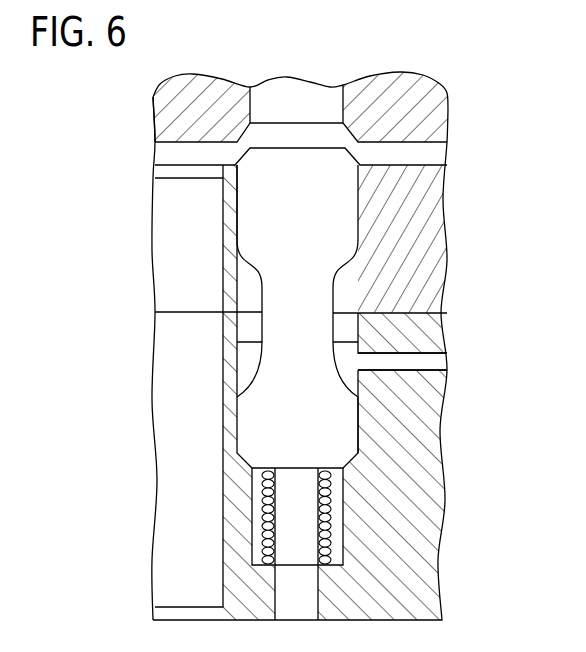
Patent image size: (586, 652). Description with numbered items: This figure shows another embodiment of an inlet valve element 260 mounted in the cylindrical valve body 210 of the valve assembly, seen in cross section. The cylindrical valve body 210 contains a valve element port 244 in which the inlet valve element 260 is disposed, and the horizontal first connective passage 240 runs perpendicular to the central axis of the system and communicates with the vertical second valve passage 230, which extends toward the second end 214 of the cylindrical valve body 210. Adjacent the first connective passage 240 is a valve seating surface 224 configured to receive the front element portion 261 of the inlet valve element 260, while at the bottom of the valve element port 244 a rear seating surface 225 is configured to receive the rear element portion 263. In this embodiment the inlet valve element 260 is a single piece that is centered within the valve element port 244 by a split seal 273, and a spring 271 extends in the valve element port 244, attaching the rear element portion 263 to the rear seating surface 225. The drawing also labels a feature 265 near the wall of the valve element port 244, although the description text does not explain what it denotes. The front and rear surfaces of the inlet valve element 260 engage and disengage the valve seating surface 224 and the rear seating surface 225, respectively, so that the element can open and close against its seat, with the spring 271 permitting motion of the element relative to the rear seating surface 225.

The cylindrical valve body 210 is at (168, 110).
The second end 214 is at (418, 568).
The valve seating surface 224 is at (348, 132).
The rear seating surface 225 is at (353, 458).
The second valve passage 230 is at (172, 435).
The first connective passage 240 is at (168, 153).
The valve element port 244 is at (352, 358).
The inlet valve element 260 is at (336, 217).
The front element portion 261 is at (273, 185).
The rear element portion 263 is at (340, 435).
The valve seat 265 is at (250, 378).
The spring 271 is at (267, 510).
The split seal 273 is at (345, 327).